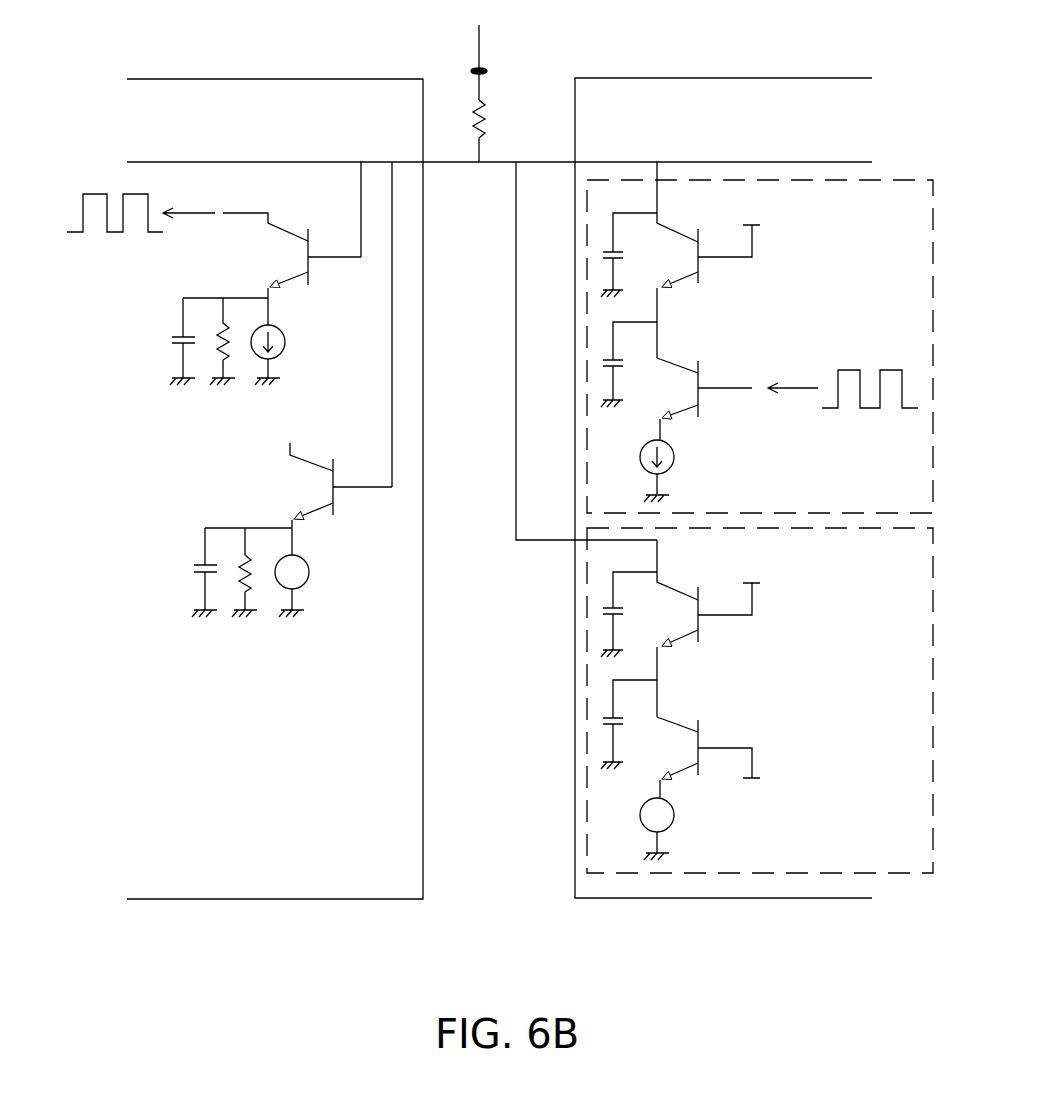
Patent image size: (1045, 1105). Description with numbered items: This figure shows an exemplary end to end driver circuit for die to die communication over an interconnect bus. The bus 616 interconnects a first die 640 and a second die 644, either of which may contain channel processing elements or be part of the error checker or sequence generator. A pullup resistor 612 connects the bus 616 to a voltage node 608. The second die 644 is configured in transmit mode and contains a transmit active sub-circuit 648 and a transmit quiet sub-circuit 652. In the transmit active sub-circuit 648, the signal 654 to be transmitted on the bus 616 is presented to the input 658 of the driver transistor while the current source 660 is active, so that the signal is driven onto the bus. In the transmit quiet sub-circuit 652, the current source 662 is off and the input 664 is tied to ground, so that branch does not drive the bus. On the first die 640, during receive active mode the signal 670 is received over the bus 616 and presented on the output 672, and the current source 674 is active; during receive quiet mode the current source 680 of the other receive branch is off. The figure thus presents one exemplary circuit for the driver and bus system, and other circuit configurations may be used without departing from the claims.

The voltage node 608 is at (479, 30).
The pullup resistor 612 is at (473, 107).
The bus 616 is at (447, 162).
The first die 640 is at (282, 899).
The second die 644 is at (713, 898).
The transmit active sub-circuit 648 is at (893, 180).
The transmit quiet sub-circuit 652 is at (892, 873).
The signal 654 is at (870, 432).
The transmit input transistor 658 is at (732, 388).
The current source 660 is at (672, 463).
The current source 662 is at (672, 822).
The input 664 is at (755, 770).
The signal 670 is at (101, 258).
The output 672 is at (247, 213).
The current source 674 is at (256, 356).
The current source 680 is at (280, 585).